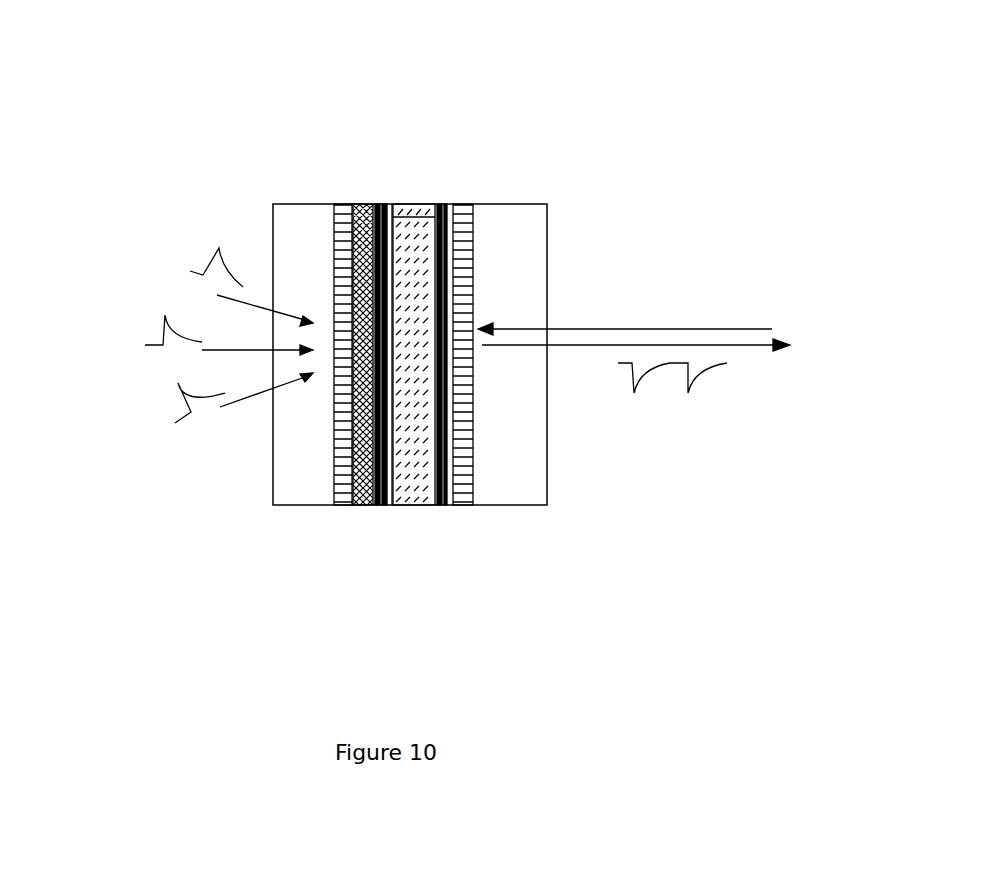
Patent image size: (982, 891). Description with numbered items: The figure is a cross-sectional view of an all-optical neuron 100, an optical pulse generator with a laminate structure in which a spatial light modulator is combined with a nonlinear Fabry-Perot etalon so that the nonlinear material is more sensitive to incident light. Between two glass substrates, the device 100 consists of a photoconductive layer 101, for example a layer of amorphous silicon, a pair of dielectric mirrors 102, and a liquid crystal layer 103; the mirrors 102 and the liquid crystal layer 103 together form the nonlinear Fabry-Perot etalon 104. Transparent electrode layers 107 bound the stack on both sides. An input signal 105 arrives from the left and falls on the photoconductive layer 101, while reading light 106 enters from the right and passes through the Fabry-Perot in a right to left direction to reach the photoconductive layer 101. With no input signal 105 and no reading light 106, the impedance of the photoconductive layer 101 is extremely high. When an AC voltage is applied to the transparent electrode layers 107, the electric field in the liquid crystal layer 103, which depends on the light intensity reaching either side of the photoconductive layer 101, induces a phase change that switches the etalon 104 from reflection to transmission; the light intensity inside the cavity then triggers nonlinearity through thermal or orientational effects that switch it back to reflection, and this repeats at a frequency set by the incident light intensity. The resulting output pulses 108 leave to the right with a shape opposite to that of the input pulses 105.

The all-optical neuron 100 is at (485, 68).
The photoconductive layer 101 is at (357, 510).
The dielectric mirrors 102 is at (383, 512).
The liquid crystal layer 103 is at (420, 202).
The nonlinear Fabry-Perot etalon 104 is at (440, 195).
The input signal 105 is at (175, 335).
The reading light 106 is at (650, 320).
The transparent electrode layers 107 is at (342, 198).
The output pulses 108 is at (677, 379).